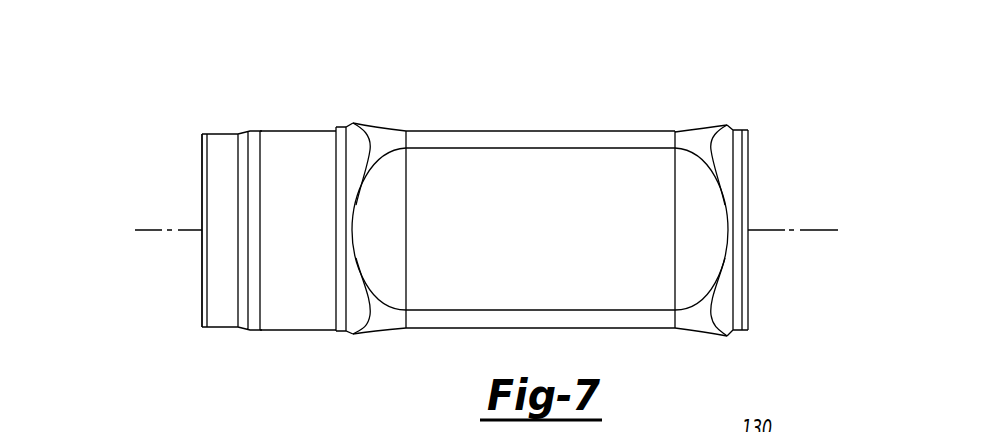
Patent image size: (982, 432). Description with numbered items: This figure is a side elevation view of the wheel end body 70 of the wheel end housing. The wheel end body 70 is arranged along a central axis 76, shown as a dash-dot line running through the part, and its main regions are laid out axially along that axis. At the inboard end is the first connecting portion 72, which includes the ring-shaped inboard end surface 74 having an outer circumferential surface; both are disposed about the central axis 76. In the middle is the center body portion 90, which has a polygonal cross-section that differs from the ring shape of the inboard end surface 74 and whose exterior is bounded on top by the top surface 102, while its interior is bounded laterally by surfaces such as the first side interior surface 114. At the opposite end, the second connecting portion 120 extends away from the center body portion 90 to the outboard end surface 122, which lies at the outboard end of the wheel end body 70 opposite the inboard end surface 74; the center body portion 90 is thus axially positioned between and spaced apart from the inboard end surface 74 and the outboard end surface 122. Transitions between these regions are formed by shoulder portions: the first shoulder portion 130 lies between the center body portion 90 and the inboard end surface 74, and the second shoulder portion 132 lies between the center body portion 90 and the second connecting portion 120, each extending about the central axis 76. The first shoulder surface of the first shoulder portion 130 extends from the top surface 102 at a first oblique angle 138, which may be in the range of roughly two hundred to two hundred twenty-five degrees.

The wheel end body 70 is at (318, 113).
The first connecting portion 72 is at (749, 119).
The inboard end surface 74 is at (748, 175).
The central axis 76 is at (800, 231).
The center body portion 90 is at (492, 131).
The top surface 102 is at (563, 131).
The first side interior surface 114 is at (551, 239).
The second connecting portion 120 is at (216, 110).
The outboard end surface 122 is at (202, 165).
The first shoulder portion 130 is at (727, 124).
The second shoulder portion 132 is at (353, 122).
The first oblique angle 138 is at (698, 127).